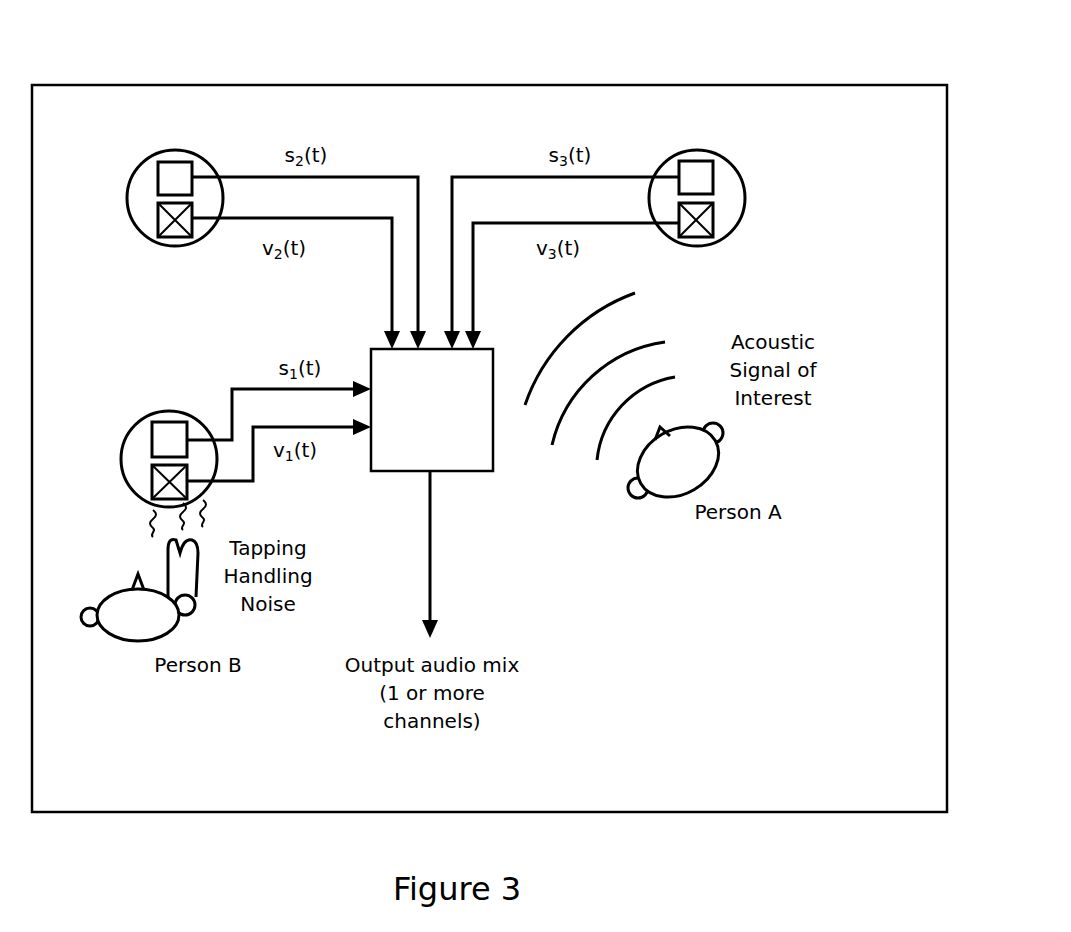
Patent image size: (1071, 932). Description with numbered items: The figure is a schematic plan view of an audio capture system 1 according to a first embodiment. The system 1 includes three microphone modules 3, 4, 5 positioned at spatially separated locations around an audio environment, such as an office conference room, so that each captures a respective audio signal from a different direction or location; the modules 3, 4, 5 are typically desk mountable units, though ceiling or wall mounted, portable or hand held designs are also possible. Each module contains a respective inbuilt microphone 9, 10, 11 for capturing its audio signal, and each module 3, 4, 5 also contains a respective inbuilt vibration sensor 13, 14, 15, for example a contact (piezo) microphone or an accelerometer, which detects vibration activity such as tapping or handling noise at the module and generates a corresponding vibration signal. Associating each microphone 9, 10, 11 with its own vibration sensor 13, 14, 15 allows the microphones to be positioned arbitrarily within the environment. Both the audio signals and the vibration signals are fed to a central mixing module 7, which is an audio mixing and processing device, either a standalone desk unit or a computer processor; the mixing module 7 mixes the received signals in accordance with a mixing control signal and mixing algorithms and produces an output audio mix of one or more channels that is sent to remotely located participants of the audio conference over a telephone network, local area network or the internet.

The audio capture system 1 is at (507, 62).
The microphone module 3 is at (172, 410).
The microphone module 4 is at (208, 163).
The microphone module 5 is at (735, 168).
The central mixing module 7 is at (478, 473).
The inbuilt microphone 9 is at (165, 438).
The inbuilt microphone 10 is at (172, 173).
The inbuilt microphone 11 is at (694, 167).
The inbuilt vibration sensor 13 is at (150, 503).
The inbuilt vibration sensor 14 is at (172, 227).
The inbuilt vibration sensor 15 is at (698, 225).